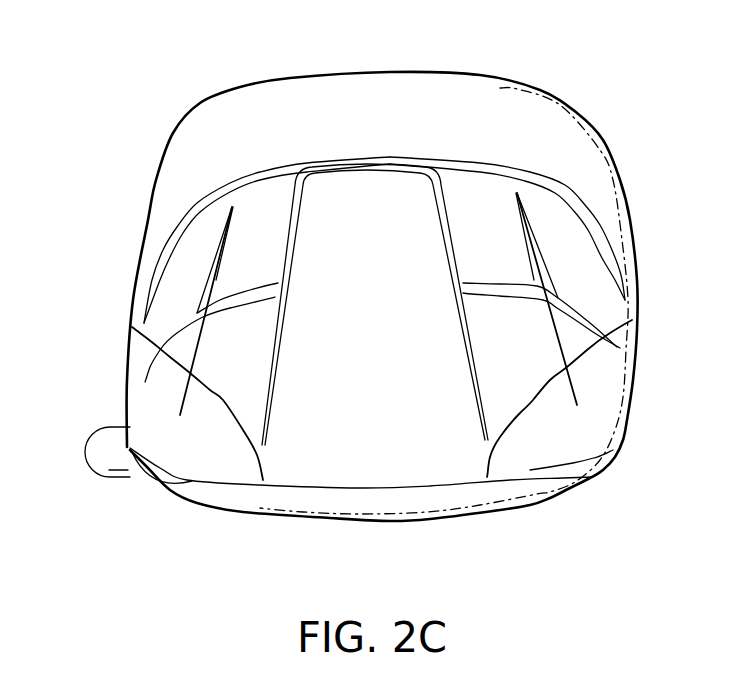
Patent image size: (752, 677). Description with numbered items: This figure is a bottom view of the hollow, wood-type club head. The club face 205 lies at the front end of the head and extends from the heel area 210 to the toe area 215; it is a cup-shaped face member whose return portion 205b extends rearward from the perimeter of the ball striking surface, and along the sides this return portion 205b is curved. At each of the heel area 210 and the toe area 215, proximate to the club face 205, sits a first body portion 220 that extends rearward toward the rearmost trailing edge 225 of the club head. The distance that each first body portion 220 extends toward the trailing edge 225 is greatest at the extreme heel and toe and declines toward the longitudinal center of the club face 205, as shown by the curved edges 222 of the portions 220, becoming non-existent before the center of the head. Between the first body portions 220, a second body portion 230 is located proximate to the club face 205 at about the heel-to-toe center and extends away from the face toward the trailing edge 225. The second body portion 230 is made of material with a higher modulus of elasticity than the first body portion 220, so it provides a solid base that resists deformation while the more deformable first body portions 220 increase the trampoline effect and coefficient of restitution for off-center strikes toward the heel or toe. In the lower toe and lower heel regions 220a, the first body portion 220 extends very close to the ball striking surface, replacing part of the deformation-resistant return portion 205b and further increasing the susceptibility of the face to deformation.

The club face 205 is at (243, 517).
The return portion 205b is at (400, 497).
The heel area 210 is at (644, 78).
The toe area 215 is at (122, 70).
The first body portion 220 is at (227, 451).
The regions where the first body portion extends close to the ball striking surface 220a is at (190, 480).
The curved edge 222 is at (200, 375).
The trailing edge 225 is at (583, 75).
The second body portion 230 is at (398, 275).